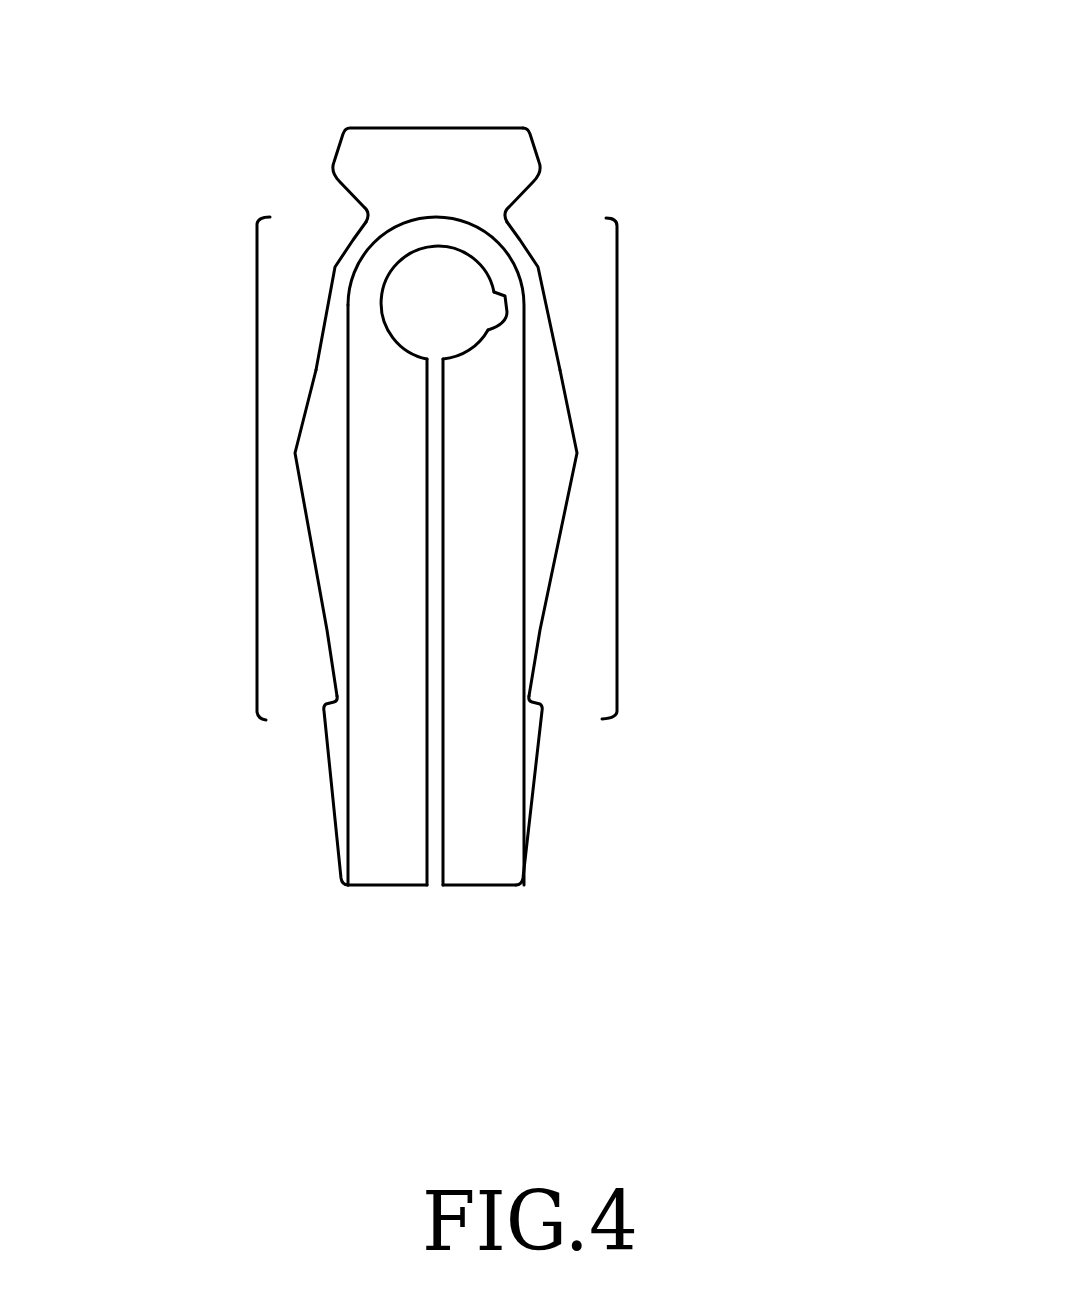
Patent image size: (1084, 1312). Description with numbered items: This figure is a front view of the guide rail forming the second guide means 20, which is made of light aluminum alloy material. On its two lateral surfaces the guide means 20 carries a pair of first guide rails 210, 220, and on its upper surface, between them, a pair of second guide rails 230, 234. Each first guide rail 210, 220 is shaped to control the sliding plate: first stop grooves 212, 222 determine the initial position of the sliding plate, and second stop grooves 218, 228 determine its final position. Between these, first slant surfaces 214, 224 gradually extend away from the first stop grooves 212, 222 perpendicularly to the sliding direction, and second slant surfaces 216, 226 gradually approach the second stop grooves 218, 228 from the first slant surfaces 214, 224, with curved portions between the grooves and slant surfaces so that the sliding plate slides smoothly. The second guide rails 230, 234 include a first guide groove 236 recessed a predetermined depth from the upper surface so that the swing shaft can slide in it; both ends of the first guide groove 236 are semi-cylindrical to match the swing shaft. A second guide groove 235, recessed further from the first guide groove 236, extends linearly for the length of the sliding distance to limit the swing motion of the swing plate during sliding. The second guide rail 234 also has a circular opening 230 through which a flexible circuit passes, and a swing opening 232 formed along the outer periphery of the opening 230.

The second guide means 20 is at (874, 382).
The first guide rail 210 is at (257, 453).
The first stop groove 212 is at (327, 707).
The first slant surface 214 is at (315, 580).
The second slant surface 216 is at (317, 373).
The second stop groove 218 is at (368, 215).
The first guide rail 220 is at (617, 453).
The first stop groove 222 is at (533, 703).
The first slant surface 224 is at (552, 588).
The second slant surface 226 is at (564, 387).
The second stop groove 228 is at (507, 213).
The circular opening 230 is at (428, 265).
The swing opening 232 is at (488, 323).
The second guide rail 234 is at (433, 435).
The second guide groove 235 is at (377, 823).
The first guide groove 236 is at (487, 540).